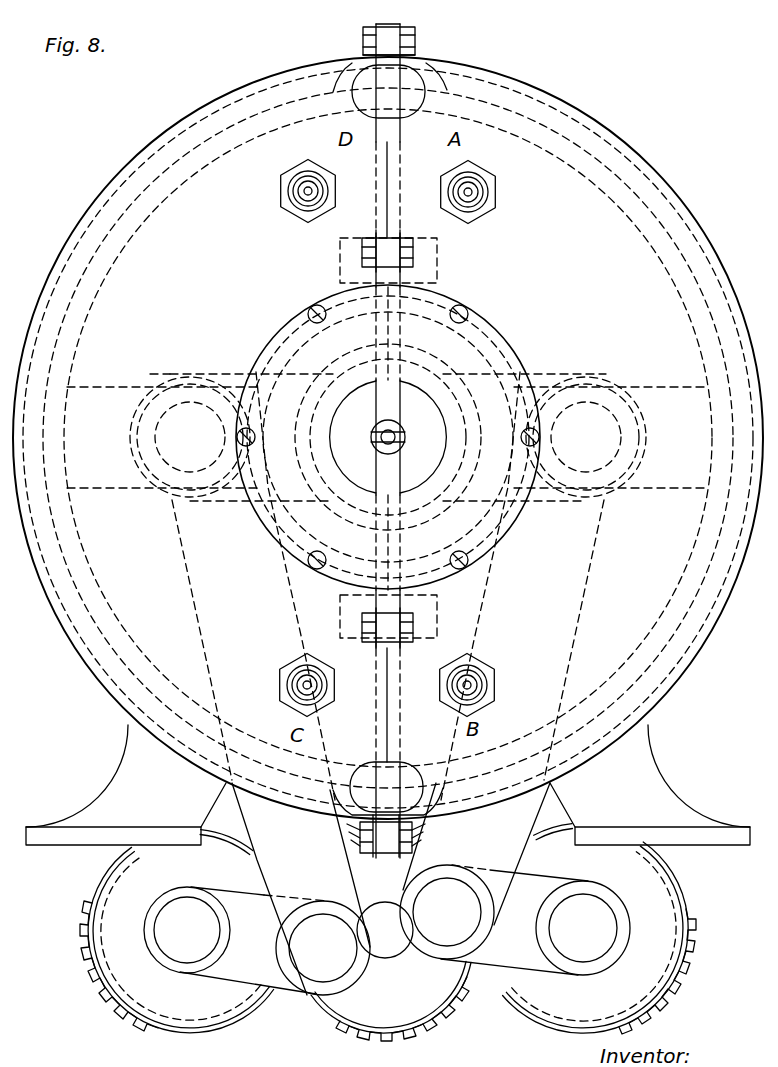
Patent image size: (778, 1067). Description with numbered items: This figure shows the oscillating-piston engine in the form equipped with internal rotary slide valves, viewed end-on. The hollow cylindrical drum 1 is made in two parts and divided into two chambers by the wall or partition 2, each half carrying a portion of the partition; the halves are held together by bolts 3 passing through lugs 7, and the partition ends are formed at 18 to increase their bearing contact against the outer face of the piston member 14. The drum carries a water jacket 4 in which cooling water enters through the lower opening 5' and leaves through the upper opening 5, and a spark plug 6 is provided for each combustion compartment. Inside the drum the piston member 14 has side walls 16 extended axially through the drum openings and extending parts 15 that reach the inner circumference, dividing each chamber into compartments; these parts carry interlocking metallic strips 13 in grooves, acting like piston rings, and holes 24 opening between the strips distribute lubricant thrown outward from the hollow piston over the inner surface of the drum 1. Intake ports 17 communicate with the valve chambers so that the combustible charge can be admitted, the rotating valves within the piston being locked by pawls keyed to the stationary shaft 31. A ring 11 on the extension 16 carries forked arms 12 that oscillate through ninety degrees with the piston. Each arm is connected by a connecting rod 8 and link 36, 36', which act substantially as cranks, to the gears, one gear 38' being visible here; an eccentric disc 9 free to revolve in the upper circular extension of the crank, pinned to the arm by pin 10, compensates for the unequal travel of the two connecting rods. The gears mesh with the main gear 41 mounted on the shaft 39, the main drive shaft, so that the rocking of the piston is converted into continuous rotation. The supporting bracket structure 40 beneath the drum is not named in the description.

The drum 1 is at (578, 162).
The partition 2 is at (392, 96).
The bolt 3 is at (410, 45).
The water jacket 4 is at (520, 80).
The upper opening 5 is at (408, 81).
The lower opening 5' is at (388, 764).
The spark plug 6 is at (486, 178).
The lug 7 is at (396, 34).
The connecting rod 8 is at (216, 624).
The eccentric disc 9 is at (202, 500).
The pin 10 is at (178, 432).
The ring 11 is at (440, 394).
The forked arm 12 is at (497, 390).
The metallic strip 13 is at (195, 373).
The piston member 14 is at (466, 303).
The extending part 15 is at (107, 400).
The side wall 16 is at (482, 402).
The intake port 17 is at (388, 437).
The partition end 18 is at (430, 276).
The hole 24 is at (388, 437).
The stationary shaft 31 is at (400, 430).
The link 36 is at (257, 929).
The link 36' is at (515, 913).
The gear 38' is at (611, 929).
The shaft 39 is at (393, 952).
The bracket 40 is at (120, 781).
The main gear 41 is at (340, 993).